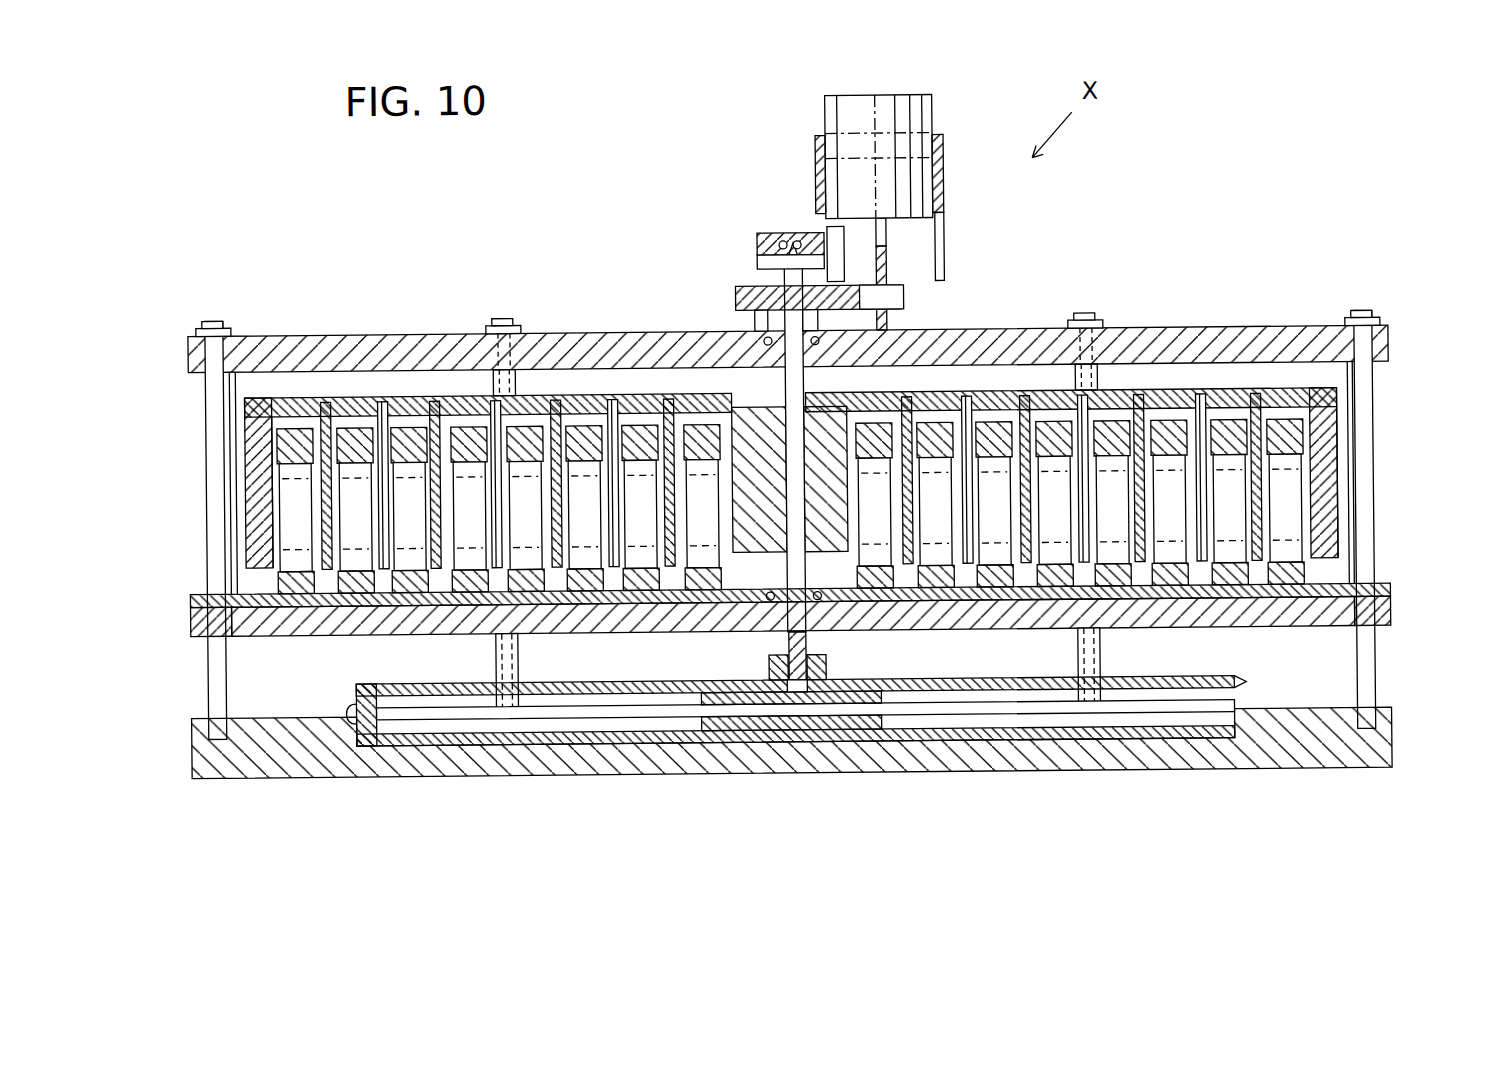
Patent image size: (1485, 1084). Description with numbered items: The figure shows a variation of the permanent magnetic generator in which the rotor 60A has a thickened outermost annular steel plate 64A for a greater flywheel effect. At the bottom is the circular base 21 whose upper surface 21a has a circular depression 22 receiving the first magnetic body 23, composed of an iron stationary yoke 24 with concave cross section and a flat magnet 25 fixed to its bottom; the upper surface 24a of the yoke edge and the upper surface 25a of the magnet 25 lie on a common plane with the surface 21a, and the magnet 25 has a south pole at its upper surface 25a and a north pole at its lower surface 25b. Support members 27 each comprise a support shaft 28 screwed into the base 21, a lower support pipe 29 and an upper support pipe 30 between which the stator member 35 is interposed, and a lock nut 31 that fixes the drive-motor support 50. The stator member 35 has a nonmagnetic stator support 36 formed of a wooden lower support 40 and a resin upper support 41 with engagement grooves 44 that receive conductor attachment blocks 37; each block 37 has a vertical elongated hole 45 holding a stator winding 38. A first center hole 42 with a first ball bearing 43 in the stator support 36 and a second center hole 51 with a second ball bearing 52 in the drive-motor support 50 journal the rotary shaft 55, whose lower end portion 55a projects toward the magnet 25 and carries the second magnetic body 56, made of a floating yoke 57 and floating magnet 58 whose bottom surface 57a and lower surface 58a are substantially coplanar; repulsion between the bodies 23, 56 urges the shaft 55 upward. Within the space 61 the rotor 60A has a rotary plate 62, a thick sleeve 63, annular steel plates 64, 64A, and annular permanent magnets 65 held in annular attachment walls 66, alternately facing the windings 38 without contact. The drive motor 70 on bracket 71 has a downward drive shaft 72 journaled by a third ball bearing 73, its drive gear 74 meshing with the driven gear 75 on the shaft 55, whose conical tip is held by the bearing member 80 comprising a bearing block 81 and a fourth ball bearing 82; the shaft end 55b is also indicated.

The base 21 is at (1110, 760).
The upper surface of the base 21a is at (1302, 712).
The circular depression 22 is at (1240, 727).
The first magnetic body 23 is at (920, 615).
The stationary yoke 24 is at (1000, 745).
The upper surface of the stationary yoke edge 24a is at (1262, 683).
The flat magnet 25 is at (790, 730).
The upper surface of the magnet 25a is at (860, 730).
The lower surface of the magnet 25b is at (775, 730).
The support member 27 is at (214, 316).
The support shaft 28 is at (231, 500).
The lower support pipe 29 is at (225, 690).
The upper support pipe 30 is at (490, 367).
The lock nut 31 is at (228, 323).
The stator member 35 is at (1385, 592).
The stator support 36 is at (660, 602).
The conductor attachment block 37 is at (300, 590).
The stator winding 38 is at (250, 558).
The lower support 40 is at (360, 590).
The upper support 41 is at (1362, 615).
The first center hole 42 is at (822, 668).
The first ball bearing 43 is at (782, 592).
The engagement groove 44 is at (580, 590).
The vertical elongated hole 45 is at (298, 465).
The drive-motor support 50 is at (1192, 342).
The second center hole 51 is at (772, 350).
The second ball bearing 52 is at (752, 331).
The rotary shaft 55 is at (806, 382).
The lower end portion of the rotary shaft 55a is at (760, 700).
The shaft upper end 55b is at (770, 262).
The second magnetic body 56 is at (830, 705).
The floating yoke 57 is at (432, 745).
The bottom surface of the floating yoke edge 57a is at (350, 712).
The floating magnet 58 is at (900, 742).
The lower surface of the floating magnet 58a is at (700, 742).
The rotor 60A is at (1282, 400).
The space 61 is at (432, 390).
The rotary plate 62 is at (632, 355).
The sleeve 63 is at (875, 505).
The annular steel plate 64 is at (360, 430).
The outermost annular steel plate 64A is at (1340, 415).
The annular permanent magnet 65 is at (791, 506).
The annular attachment wall 66 is at (1296, 400).
The drive motor 70 is at (940, 114).
The drive-motor support bracket 71 is at (944, 214).
The drive shaft 72 is at (892, 250).
The third ball bearing 73 is at (905, 312).
The drive gear 74 is at (862, 285).
The driven gear 75 is at (748, 290).
The bearing member 80 is at (806, 232).
The bearing block 81 is at (772, 232).
The fourth ball bearing 82 is at (832, 216).